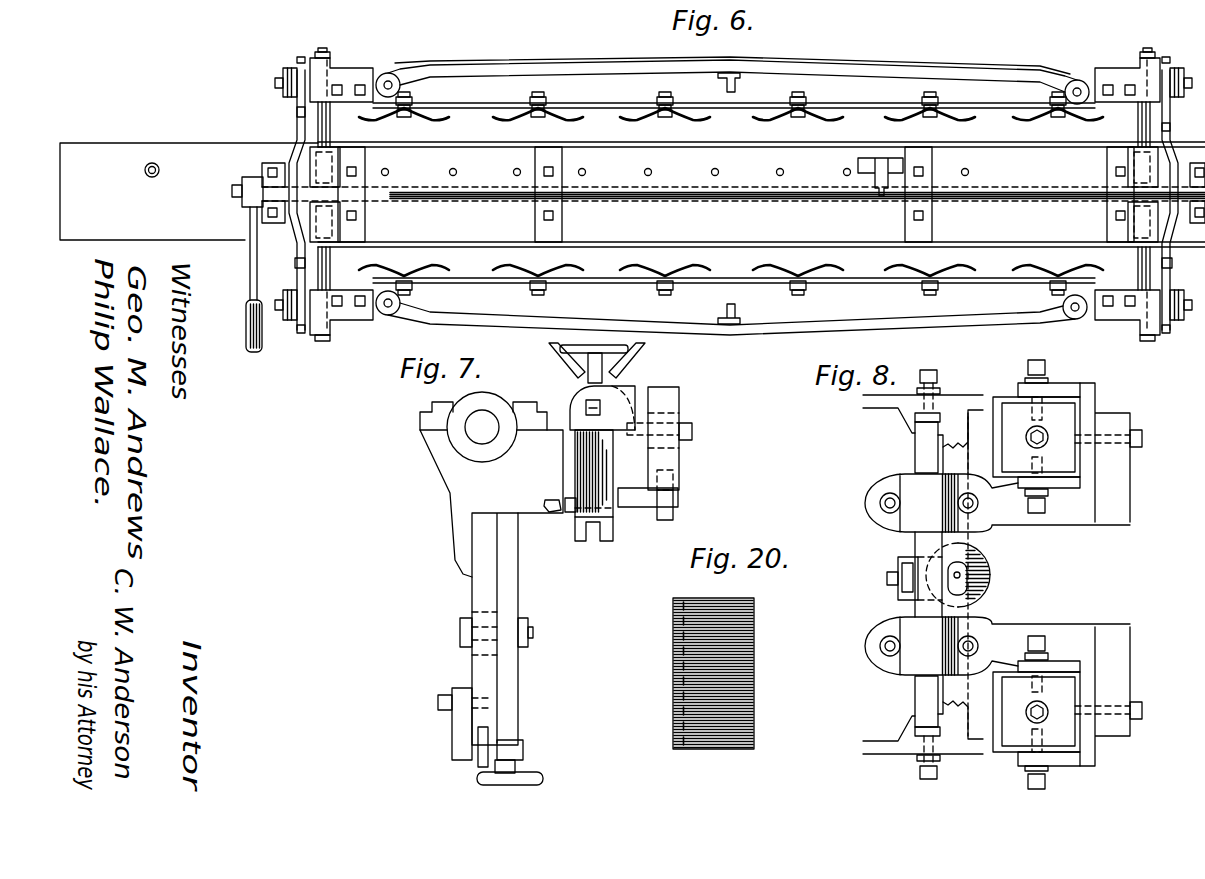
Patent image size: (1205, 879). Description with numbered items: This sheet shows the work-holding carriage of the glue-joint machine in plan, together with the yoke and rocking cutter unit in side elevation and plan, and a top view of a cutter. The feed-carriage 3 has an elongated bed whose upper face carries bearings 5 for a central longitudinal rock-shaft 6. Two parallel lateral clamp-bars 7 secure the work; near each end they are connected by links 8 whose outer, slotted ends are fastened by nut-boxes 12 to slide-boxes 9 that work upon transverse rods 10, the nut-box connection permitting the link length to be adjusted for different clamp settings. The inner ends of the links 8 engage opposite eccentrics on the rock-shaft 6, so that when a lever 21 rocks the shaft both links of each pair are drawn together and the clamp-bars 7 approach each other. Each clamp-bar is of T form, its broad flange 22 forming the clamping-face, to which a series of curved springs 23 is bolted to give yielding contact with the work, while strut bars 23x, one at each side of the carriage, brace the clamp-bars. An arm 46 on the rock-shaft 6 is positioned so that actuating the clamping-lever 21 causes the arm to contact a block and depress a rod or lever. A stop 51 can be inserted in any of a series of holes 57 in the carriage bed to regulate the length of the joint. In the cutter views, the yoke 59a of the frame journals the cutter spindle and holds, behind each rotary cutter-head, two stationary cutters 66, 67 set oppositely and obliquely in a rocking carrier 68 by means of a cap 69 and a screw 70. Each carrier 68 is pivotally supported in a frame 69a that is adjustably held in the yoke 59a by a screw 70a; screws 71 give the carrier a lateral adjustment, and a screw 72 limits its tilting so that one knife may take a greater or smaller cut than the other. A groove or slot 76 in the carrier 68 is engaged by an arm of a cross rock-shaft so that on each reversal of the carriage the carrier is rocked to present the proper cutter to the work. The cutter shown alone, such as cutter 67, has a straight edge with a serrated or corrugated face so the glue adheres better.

In FIG. 6, the feed-carriage 3 is at (761, 135).
In FIG. 6, the bearings 5 is at (266, 183).
In FIG. 6, the rock-shaft 6 is at (733, 183).
In FIG. 6, the clamp-bars 7 is at (732, 196).
In FIG. 6, the links 8 is at (296, 123).
In FIG. 6, the slide-boxes 9 is at (350, 72).
In FIG. 6, the transverse rods 10 is at (330, 125).
In FIG. 6, the nut-boxes 12 is at (291, 68).
In FIG. 6, the lever 21 is at (249, 268).
In FIG. 6, the flange 22 is at (600, 108).
In FIG. 6, the curved springs 23 is at (432, 116).
In FIG. 6, the strut bars 23x is at (667, 62).
In FIG. 6, the arm 46 is at (872, 184).
In FIG. 6, the stop 51 is at (160, 170).
In FIG. 6, the holes 57 is at (448, 172).
In FIG. 7, the yoke 59a is at (443, 487).
In FIG. 8, the yoke 59a is at (981, 574).
In FIG. 7, the stationary cutter 66 is at (625, 352).
In FIG. 8, the stationary cutter 66 is at (1080, 401).
In FIG. 7, the stationary cutter 67 is at (553, 352).
In FIG. 20, the stationary cutter 67 is at (672, 647).
In FIG. 8, the stationary cutter 67 is at (1000, 433).
In FIG. 7, the rocking carrier 68 is at (627, 373).
In FIG. 7, the cap 69 is at (580, 351).
In FIG. 8, the cap 69 is at (1049, 574).
In FIG. 7, the frame 69a is at (681, 403).
In FIG. 8, the frame 69a is at (1080, 393).
In FIG. 7, the screw 70 is at (604, 352).
In FIG. 8, the screw 70 is at (1048, 437).
In FIG. 8, the screw 70a is at (1145, 438).
In FIG. 7, the screws 71 is at (586, 405).
In FIG. 8, the screws 71 is at (1038, 368).
In FIG. 7, the screw 72 is at (565, 502).
In FIG. 7, the groove or slot 76 is at (597, 535).